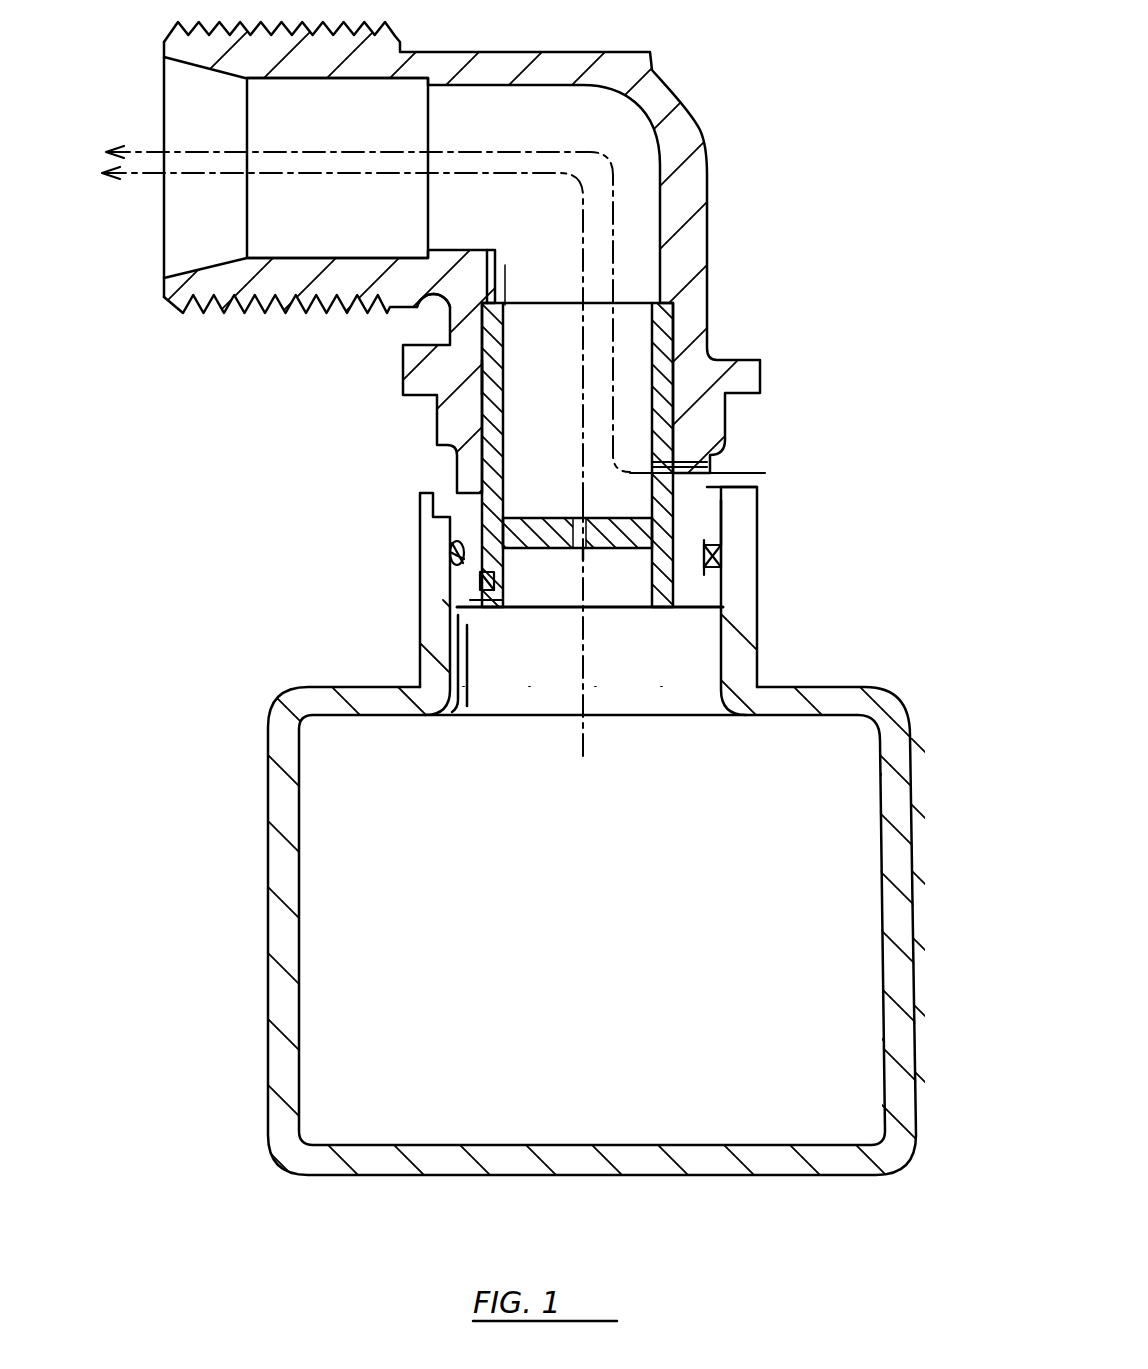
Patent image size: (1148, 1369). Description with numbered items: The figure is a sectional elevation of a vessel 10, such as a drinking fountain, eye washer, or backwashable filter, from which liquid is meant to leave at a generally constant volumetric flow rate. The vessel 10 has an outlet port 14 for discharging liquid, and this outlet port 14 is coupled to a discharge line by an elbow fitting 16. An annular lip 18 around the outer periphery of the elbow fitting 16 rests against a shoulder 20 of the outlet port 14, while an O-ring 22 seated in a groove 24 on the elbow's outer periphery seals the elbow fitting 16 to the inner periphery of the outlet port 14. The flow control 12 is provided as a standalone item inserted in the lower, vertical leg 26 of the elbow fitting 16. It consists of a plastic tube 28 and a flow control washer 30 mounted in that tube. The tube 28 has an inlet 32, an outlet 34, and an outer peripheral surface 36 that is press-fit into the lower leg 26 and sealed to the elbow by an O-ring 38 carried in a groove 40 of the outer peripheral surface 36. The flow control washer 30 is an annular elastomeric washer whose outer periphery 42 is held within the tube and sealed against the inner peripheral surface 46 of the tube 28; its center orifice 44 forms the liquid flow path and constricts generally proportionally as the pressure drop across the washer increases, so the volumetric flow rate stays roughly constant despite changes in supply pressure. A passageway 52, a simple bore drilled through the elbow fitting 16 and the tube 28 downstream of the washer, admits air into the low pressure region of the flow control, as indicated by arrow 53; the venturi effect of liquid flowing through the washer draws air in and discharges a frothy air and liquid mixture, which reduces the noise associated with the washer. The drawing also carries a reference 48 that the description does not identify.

The vessel 10 is at (265, 862).
The flow control 12 is at (683, 326).
The outlet port 14 is at (740, 640).
The elbow fitting 16 is at (688, 95).
The annular lip 18 is at (748, 480).
The shoulder 20 is at (742, 506).
The O-ring 22 is at (722, 556).
The groove 24 is at (725, 574).
The lower vertical leg 26 is at (432, 408).
The plastic tube 28 is at (662, 356).
The flow control washer 30 is at (540, 520).
The inlet 32 is at (523, 610).
The outlet 34 is at (509, 318).
The outer peripheral surface 36 is at (482, 377).
The O-ring 38 is at (482, 582).
The groove 40 is at (492, 592).
The outer periphery 42 is at (452, 548).
The center orifice 44 is at (597, 562).
The inner peripheral surface 46 is at (650, 298).
The rod / axis line 48 is at (586, 737).
The passageway 52 is at (712, 470).
The arrow 53 is at (498, 120).